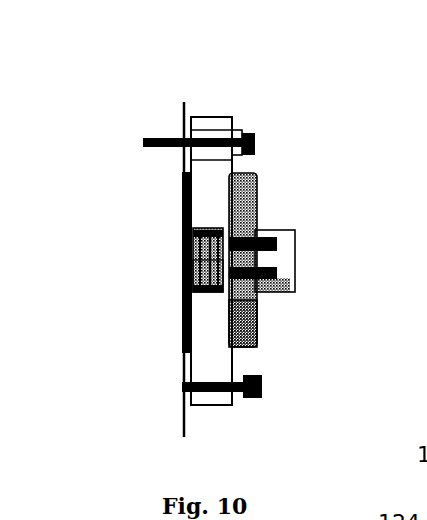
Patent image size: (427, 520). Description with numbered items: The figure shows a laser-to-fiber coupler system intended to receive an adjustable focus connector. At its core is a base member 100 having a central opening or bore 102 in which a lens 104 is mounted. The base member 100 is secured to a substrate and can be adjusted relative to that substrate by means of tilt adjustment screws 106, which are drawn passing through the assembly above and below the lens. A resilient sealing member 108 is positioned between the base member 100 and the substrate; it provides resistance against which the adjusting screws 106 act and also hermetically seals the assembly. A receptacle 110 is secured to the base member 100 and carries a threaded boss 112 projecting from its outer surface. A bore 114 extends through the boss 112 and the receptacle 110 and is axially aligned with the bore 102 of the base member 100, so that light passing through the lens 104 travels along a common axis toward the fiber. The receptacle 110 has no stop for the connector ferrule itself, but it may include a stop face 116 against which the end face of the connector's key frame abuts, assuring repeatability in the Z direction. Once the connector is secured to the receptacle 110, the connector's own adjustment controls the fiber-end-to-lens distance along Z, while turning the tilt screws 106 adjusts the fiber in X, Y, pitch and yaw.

The base member 100 is at (208, 115).
The central bore 102 is at (182, 297).
The lens 104 is at (182, 252).
The tilt adjustment screws 106 is at (248, 130).
The resilient sealing member 108 is at (177, 347).
The receptacle 110 is at (253, 323).
The threaded boss 112 is at (268, 293).
The bore 114 is at (282, 285).
The stop face 116 is at (277, 228).